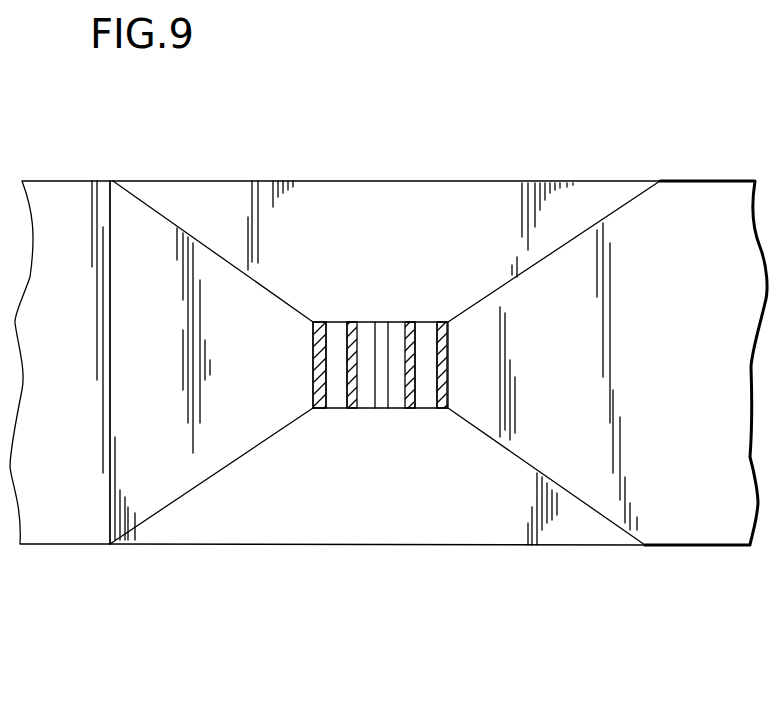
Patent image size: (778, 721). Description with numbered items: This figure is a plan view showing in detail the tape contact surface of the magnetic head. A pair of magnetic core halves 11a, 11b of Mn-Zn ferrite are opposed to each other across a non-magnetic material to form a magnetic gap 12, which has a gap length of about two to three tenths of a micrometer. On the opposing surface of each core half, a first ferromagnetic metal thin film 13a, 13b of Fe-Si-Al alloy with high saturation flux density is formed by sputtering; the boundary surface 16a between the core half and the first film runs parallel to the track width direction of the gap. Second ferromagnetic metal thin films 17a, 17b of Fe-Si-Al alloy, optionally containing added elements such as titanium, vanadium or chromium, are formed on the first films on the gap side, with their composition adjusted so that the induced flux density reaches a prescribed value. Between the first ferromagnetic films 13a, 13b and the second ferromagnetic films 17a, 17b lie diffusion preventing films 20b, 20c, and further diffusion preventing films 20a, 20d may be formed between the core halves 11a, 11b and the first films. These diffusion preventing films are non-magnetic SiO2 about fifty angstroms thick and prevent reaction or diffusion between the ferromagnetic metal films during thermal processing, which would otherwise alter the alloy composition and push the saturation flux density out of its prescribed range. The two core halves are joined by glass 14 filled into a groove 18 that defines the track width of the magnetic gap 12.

The magnetic core half 11a is at (72, 515).
The magnetic core half 11b is at (675, 503).
The magnetic gap 12 is at (380, 410).
The first ferromagnetic metal thin film 13a is at (330, 328).
The first ferromagnetic metal thin film 13b is at (423, 328).
The glass 14 is at (466, 222).
The opposing surface (boundary surface) 16a is at (312, 365).
The second ferromagnetic metal thin film 17a is at (362, 328).
The second ferromagnetic metal thin film 17b is at (392, 328).
The groove 18 is at (163, 507).
The diffusion preventing film 20a is at (316, 408).
The diffusion preventing film 20b is at (352, 408).
The diffusion preventing film 20c is at (410, 408).
The diffusion preventing film 20d is at (440, 410).